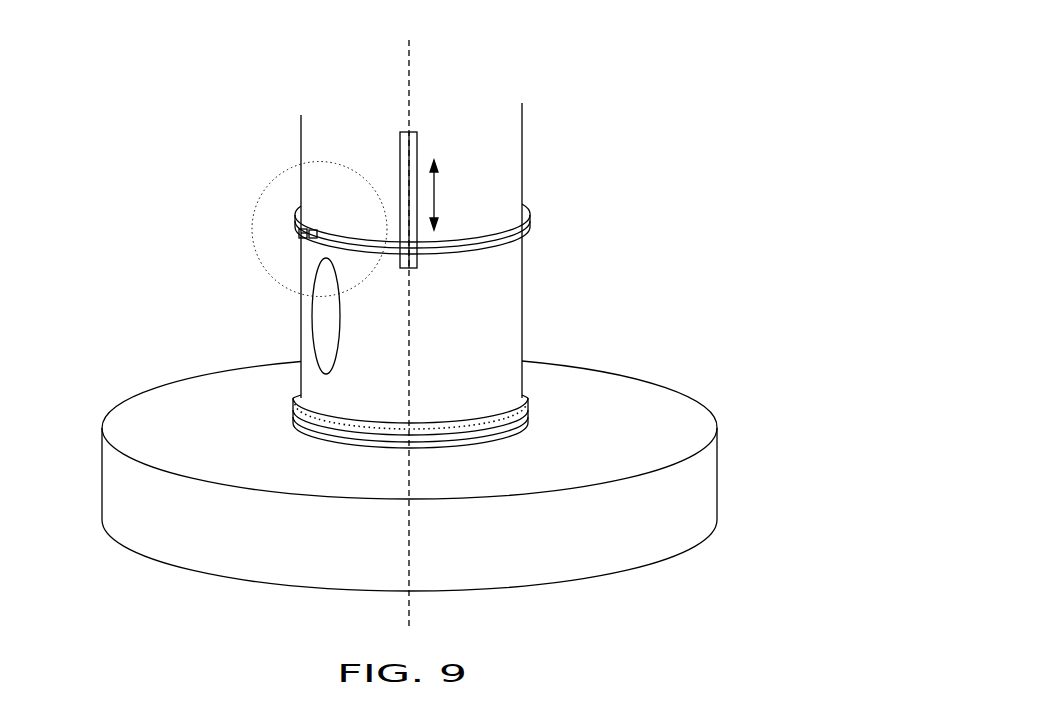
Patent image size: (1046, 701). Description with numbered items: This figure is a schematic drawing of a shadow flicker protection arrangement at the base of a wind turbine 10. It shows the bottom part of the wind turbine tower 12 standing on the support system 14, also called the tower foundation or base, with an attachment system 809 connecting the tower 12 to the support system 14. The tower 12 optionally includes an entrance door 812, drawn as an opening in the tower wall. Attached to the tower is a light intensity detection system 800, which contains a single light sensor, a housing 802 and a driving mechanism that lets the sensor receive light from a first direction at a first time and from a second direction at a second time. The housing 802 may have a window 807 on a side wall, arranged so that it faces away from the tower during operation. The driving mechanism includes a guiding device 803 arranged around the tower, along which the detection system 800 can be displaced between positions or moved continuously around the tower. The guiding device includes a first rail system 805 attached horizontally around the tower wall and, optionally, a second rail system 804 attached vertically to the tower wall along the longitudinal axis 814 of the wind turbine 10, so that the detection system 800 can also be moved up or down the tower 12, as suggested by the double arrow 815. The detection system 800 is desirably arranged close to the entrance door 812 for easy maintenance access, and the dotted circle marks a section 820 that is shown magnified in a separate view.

The wind turbine 10 is at (138, 70).
The wind turbine tower 12 is at (522, 118).
The support system 14 is at (717, 490).
The light intensity detection system 800 is at (238, 194).
The housing 802 is at (299, 232).
The guiding device 803 is at (545, 207).
The second rail system 804 is at (400, 131).
The first rail system 805 is at (530, 230).
The window 807 is at (300, 243).
The attachment system 809 is at (546, 394).
The entrance door 812 is at (294, 338).
The longitudinal axis 814 is at (409, 63).
The vertical adjustment direction 815 is at (440, 195).
The section 820 is at (285, 172).